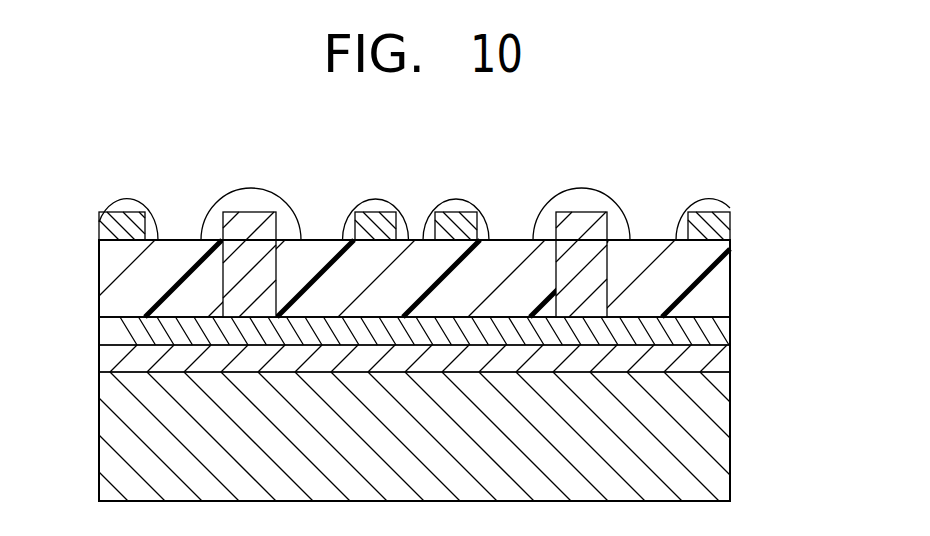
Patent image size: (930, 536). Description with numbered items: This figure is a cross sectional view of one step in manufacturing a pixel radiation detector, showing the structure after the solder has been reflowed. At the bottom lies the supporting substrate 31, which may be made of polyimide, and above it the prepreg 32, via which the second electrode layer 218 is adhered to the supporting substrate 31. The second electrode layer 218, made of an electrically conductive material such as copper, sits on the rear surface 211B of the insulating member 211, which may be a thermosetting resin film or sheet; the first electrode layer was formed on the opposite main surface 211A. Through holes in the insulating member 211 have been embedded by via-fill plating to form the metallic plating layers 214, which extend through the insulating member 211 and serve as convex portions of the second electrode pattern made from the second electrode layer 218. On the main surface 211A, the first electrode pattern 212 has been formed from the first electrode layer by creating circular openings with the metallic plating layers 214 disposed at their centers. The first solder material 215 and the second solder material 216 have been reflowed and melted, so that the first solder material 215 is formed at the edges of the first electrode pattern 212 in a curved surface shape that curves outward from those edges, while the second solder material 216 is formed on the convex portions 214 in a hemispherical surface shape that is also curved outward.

The supporting substrate 31 is at (127, 437).
The prepreg 32 is at (130, 360).
The second electrode layer 218 is at (720, 332).
The insulating member 211 is at (718, 300).
The main surface 211A is at (108, 232).
The rear surface 211B is at (127, 320).
The first electrode pattern 212 is at (720, 225).
The metallic plating layer 214 is at (578, 257).
The first solder material 215 is at (125, 202).
The second solder material 216 is at (259, 203).